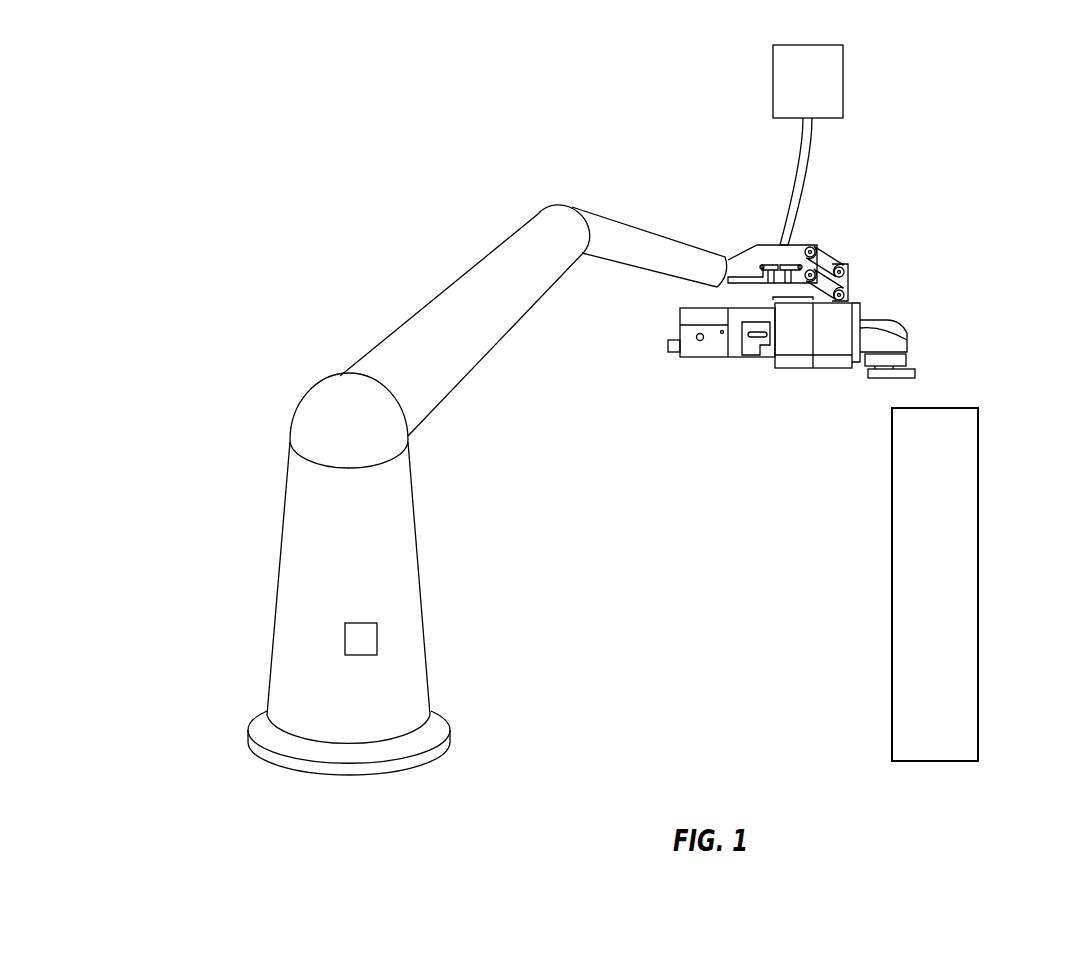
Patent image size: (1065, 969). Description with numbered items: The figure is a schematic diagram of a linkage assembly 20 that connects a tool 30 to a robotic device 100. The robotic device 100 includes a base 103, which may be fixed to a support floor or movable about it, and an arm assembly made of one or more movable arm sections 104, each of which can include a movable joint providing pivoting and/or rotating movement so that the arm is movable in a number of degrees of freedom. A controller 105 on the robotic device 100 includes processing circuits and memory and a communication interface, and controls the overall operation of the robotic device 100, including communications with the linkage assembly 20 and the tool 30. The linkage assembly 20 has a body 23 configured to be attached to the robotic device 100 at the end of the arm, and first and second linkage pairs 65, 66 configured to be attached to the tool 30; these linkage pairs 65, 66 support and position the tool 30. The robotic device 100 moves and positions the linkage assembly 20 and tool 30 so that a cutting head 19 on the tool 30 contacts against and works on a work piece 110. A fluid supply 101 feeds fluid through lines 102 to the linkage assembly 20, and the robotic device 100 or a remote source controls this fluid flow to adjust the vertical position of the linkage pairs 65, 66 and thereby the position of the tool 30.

The robotic device 100 is at (418, 342).
The fluid supply 101 is at (825, 93).
The lines 102 is at (795, 195).
The base 103 is at (278, 737).
The arm sections 104 is at (620, 237).
The controller 105 is at (362, 632).
The work piece 110 is at (947, 532).
The cutting head 19 is at (913, 373).
The linkage assembly 20 is at (760, 251).
The body 23 is at (769, 250).
The tool 30 is at (795, 342).
The first linkage pair 65 is at (843, 245).
The second linkage pair 66 is at (858, 279).